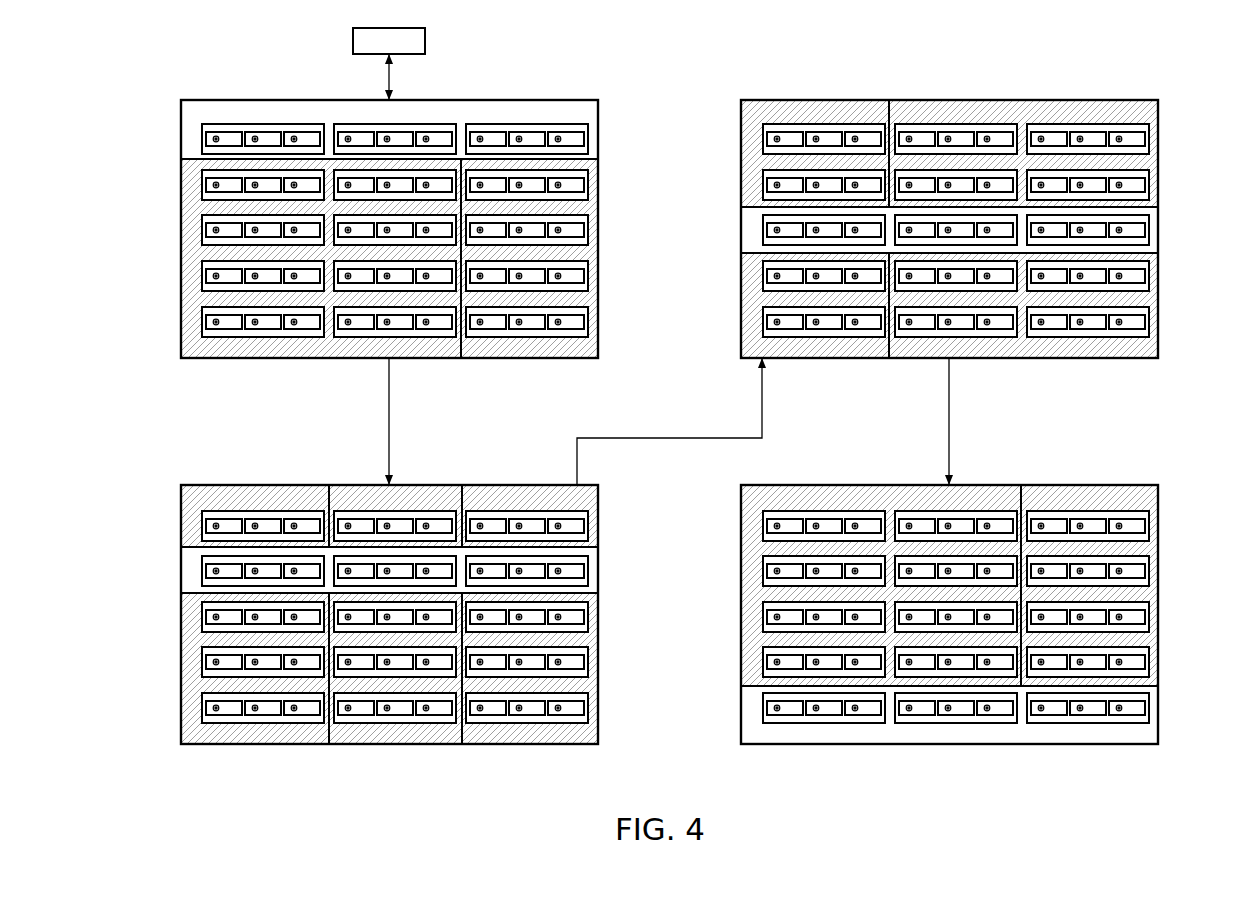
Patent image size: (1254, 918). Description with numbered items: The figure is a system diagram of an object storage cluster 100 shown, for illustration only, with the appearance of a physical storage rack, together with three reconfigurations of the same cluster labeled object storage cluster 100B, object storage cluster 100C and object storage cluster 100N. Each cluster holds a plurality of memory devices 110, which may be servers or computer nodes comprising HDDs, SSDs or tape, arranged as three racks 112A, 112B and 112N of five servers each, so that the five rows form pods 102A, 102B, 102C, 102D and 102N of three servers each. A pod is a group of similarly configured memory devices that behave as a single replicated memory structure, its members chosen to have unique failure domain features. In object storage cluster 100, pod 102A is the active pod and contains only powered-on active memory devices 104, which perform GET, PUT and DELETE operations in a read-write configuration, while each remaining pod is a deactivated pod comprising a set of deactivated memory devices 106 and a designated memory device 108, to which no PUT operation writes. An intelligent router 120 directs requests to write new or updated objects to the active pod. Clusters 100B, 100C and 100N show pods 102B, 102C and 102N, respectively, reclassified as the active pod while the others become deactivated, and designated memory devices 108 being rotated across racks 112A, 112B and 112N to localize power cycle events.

The object storage cluster 100 is at (371, 268).
The object storage cluster 100B is at (367, 656).
The object storage cluster 100C is at (984, 268).
The object storage cluster 100N is at (986, 653).
The pod 102A is at (600, 130).
The pod 102B is at (600, 176).
The pod 102C is at (600, 221).
The pod 102D is at (600, 268).
The pod 102N is at (600, 313).
The active memory devices 104 is at (683, 381).
The deactivated memory devices 106 is at (157, 149).
The designated memory device 108 is at (698, 277).
The memory devices 110 is at (501, 76).
The rack 112A is at (531, 593).
The rack 112B is at (666, 594).
The rack 112N is at (786, 594).
The intelligent router 120 is at (353, 38).